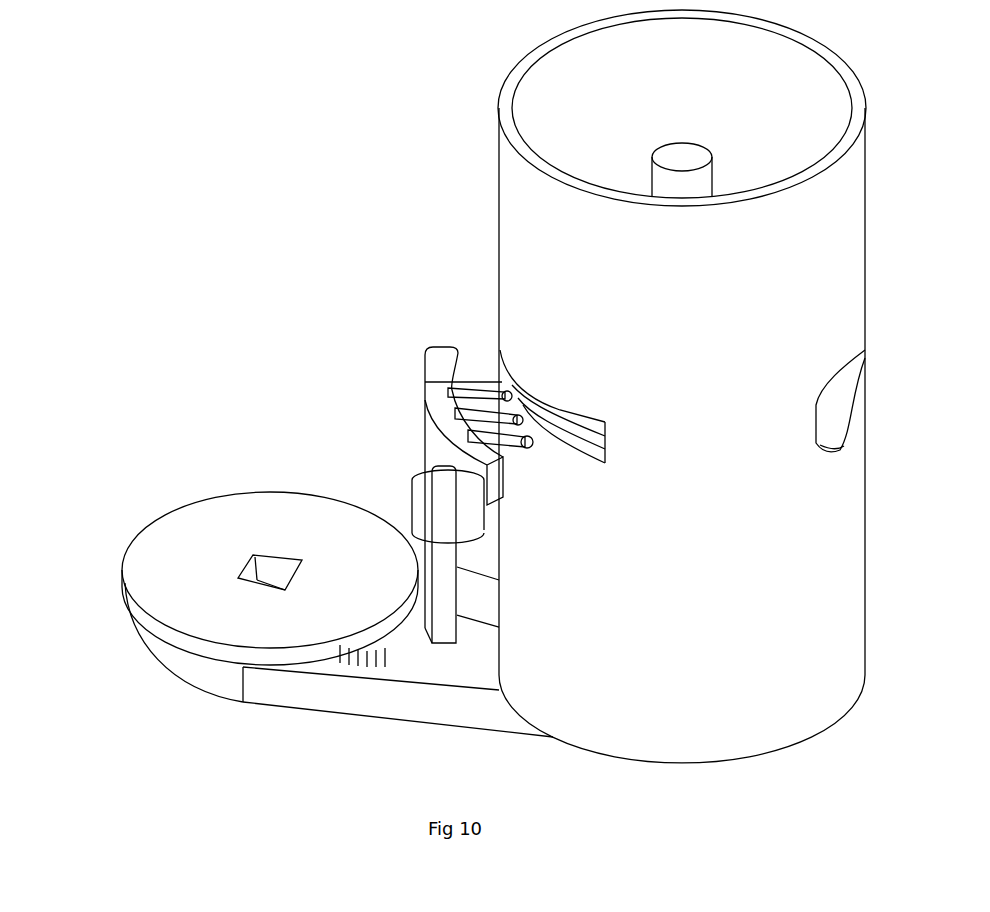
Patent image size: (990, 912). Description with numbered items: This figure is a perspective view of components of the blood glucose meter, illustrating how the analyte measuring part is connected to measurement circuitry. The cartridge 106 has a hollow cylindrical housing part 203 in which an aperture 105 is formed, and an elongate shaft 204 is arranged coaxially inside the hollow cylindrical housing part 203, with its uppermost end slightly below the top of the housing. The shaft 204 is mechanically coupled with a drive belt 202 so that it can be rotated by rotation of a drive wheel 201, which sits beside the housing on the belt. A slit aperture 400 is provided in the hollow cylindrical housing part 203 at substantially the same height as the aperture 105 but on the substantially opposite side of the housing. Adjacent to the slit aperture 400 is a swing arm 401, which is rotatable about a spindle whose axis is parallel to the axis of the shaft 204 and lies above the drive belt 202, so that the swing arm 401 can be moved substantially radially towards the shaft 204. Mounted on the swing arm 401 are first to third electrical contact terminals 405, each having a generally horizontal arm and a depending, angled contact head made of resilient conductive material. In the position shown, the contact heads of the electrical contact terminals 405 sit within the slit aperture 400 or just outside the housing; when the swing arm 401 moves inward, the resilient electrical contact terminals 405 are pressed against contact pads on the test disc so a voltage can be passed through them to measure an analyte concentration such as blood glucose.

The cartridge 106 is at (320, 155).
The hollow cylindrical housing part 203 is at (828, 201).
The elongate shaft 204 is at (675, 154).
The aperture 105 is at (828, 430).
The slit aperture 400 is at (553, 405).
The electrical contact terminals 405 is at (477, 380).
The swing arm 401 is at (447, 422).
The drive wheel 201 is at (170, 550).
The drive belt 202 is at (283, 692).